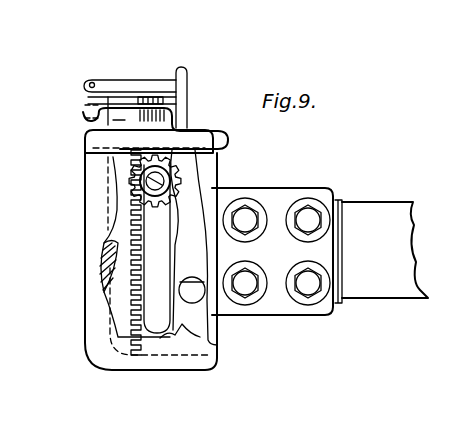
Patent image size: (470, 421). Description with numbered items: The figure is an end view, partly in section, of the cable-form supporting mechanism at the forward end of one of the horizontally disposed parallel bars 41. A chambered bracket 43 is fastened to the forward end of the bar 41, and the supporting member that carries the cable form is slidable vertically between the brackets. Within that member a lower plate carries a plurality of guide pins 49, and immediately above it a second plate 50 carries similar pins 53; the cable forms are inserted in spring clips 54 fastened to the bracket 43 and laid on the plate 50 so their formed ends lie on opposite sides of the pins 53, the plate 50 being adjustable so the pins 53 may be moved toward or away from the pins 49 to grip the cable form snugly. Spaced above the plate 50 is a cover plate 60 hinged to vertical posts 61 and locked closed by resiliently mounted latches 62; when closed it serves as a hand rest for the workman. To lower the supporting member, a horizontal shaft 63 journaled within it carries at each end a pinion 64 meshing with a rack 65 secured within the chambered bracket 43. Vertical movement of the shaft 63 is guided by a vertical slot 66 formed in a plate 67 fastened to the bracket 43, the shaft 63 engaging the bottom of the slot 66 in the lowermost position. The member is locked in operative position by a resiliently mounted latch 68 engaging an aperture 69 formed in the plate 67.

The horizontally disposed parallel bar 41 is at (388, 205).
The chambered bracket 43 is at (97, 183).
The guide pin 49 is at (181, 95).
The second plate 50 is at (113, 127).
The pin 53 is at (154, 103).
The spring clip 54 is at (142, 109).
The cover plate 60 is at (121, 54).
The vertical post 61 is at (86, 112).
The resiliently mounted latch 62 is at (185, 80).
The horizontal shaft 63 is at (219, 163).
The pinion 64 is at (173, 203).
The rack 65 is at (110, 257).
The vertical slot 66 is at (137, 302).
The plate 67 is at (183, 323).
The resiliently mounted latch 68 is at (219, 338).
The aperture 69 is at (196, 265).